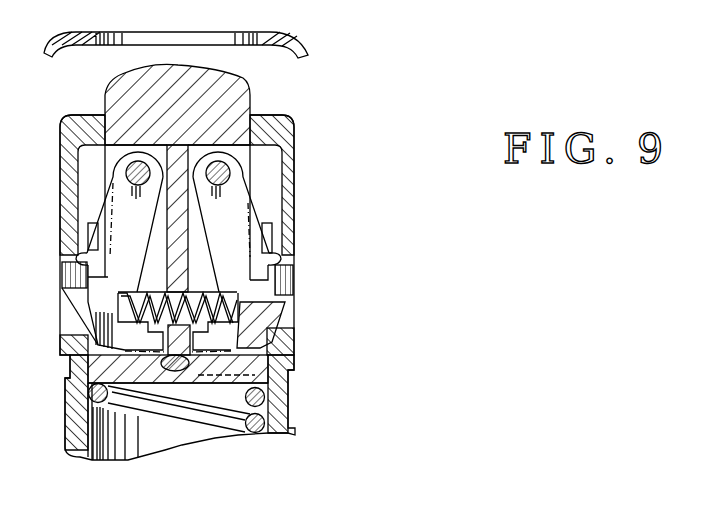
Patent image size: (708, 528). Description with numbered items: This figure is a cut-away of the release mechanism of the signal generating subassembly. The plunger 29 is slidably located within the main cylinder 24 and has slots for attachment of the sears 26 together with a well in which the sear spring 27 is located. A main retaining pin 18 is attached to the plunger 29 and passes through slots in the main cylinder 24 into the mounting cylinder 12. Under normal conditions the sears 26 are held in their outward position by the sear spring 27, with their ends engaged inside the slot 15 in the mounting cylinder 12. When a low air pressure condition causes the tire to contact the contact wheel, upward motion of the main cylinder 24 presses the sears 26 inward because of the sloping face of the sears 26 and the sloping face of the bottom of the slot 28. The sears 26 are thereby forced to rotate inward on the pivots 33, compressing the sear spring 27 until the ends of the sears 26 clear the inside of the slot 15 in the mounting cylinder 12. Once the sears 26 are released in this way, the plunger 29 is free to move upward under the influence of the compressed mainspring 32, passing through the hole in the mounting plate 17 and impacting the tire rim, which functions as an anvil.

The mounting plate 17 is at (304, 44).
The plunger 29 is at (238, 96).
The mounting cylinder 12 is at (286, 131).
The pivots 33 is at (224, 173).
The slot 15 is at (291, 257).
The sears 26 is at (287, 281).
The sear spring 27 is at (237, 300).
The slot 28 is at (283, 326).
The main retaining pin 18 is at (174, 385).
The mainspring 32 is at (257, 434).
The main cylinder 24 is at (86, 458).